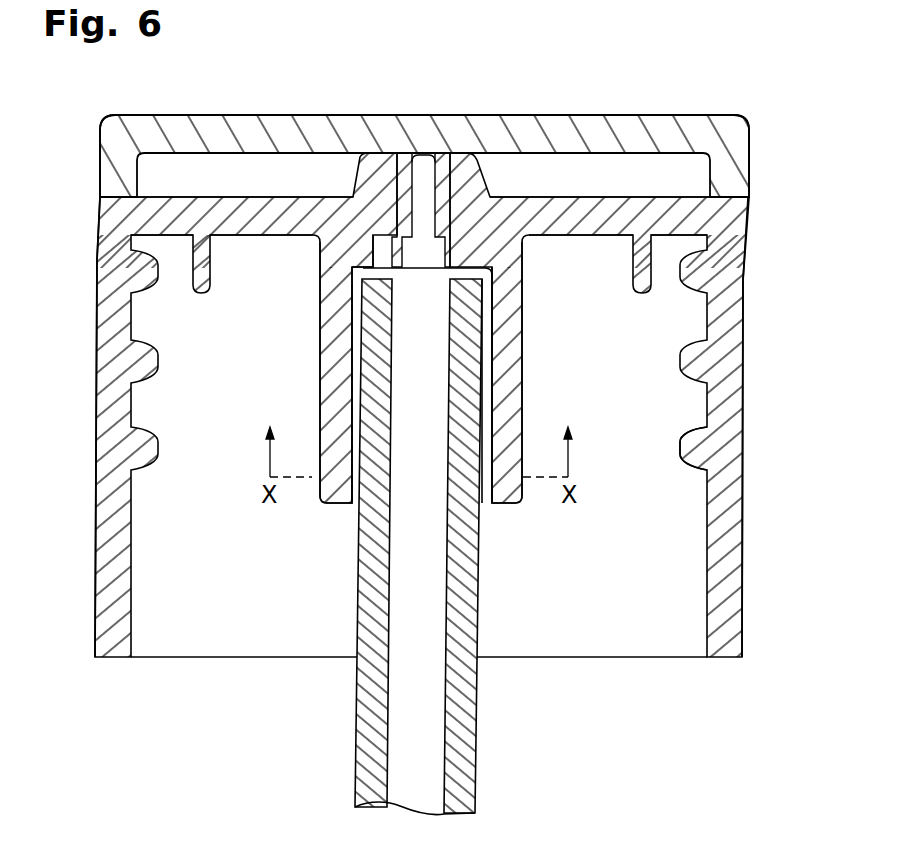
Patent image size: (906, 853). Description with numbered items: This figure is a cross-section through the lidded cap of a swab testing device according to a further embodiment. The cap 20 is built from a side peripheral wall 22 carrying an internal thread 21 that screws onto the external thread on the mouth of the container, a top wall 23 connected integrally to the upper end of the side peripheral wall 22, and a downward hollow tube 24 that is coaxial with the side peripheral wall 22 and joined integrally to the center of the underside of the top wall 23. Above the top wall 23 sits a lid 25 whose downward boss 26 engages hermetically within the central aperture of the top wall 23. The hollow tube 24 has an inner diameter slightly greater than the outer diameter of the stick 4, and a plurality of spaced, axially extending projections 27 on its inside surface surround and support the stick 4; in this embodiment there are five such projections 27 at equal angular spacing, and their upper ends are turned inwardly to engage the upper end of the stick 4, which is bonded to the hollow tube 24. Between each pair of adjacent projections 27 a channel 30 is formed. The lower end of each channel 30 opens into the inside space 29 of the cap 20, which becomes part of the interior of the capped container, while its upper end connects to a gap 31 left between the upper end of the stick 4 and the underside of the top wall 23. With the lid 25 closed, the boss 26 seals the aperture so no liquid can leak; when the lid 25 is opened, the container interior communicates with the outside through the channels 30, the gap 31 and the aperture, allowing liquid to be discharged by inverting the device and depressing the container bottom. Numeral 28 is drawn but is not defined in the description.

The stick 4 is at (470, 738).
The cap 20 is at (770, 175).
The internal thread 21 is at (684, 449).
The side peripheral wall 22 is at (735, 372).
The top wall 23 is at (576, 200).
The hollow tube 24 is at (510, 372).
The lid 25 is at (646, 120).
The downward boss 26 is at (397, 183).
The projections 27 is at (320, 378).
The recess 28 is at (322, 263).
The inside space 29 is at (219, 610).
The channel 30 is at (494, 300).
The gap 31 is at (400, 222).